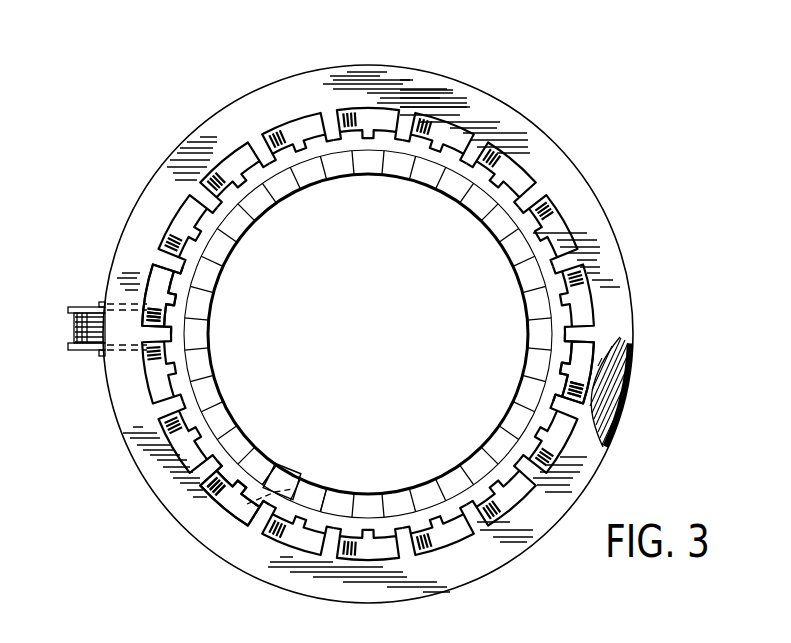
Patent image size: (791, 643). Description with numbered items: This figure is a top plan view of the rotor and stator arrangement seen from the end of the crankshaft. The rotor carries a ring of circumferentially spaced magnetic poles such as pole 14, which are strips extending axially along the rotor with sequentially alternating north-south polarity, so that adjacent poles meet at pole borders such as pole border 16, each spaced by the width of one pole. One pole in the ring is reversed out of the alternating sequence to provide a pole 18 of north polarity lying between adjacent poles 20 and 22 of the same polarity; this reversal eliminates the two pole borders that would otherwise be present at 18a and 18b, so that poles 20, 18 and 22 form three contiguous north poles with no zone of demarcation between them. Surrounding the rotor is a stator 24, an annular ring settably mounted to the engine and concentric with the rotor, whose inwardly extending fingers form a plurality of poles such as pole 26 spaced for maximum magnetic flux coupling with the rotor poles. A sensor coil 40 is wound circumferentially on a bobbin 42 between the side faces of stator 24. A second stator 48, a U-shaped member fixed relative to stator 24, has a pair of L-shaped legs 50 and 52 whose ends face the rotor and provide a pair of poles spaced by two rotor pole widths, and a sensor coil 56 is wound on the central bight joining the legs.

The pole 14 is at (456, 478).
The pole border 16 is at (439, 480).
The pole 18 is at (265, 483).
The pole border location 18a is at (287, 466).
The pole border location 18b is at (232, 498).
The pole 20 is at (259, 463).
The pole 22 is at (366, 480).
The stator 24 is at (182, 139).
The pole 26 is at (500, 157).
The sensor coil 40 is at (600, 387).
The bobbin 42 is at (581, 358).
The stator 48 is at (83, 306).
The leg 50 is at (214, 316).
The leg 52 is at (172, 356).
The sensor coil 56 is at (75, 325).